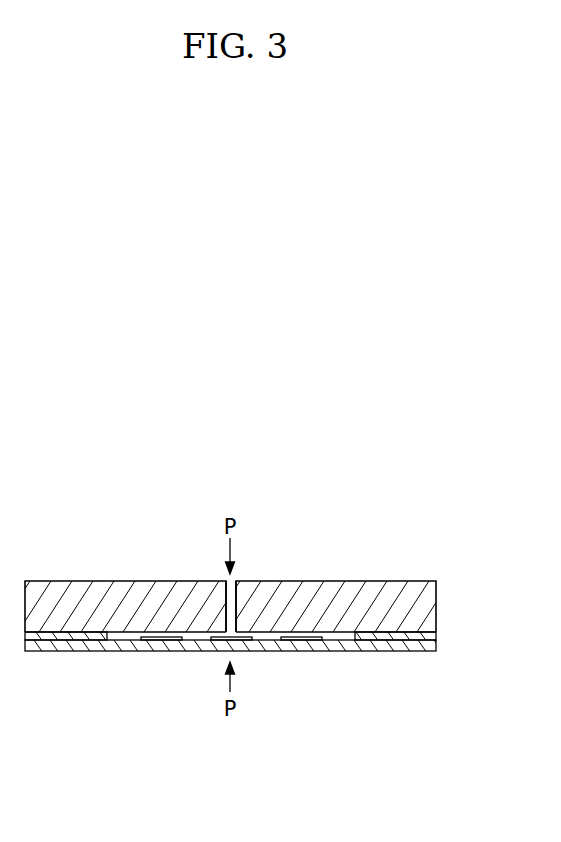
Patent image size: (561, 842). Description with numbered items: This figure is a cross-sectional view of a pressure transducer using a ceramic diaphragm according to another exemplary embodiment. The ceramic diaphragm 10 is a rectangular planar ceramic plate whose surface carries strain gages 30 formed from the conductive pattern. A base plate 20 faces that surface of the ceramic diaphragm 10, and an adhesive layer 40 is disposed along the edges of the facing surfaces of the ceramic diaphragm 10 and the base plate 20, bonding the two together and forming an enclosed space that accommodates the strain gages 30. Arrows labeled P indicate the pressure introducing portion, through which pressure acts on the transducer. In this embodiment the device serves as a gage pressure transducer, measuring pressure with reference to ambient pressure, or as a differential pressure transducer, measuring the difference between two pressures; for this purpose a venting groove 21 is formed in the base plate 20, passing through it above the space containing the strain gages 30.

The ceramic diaphragm 10 is at (430, 647).
The base plate 20 is at (102, 592).
The venting groove 21 is at (232, 578).
The strain gages 30 is at (160, 652).
The adhesive layer 40 is at (427, 632).